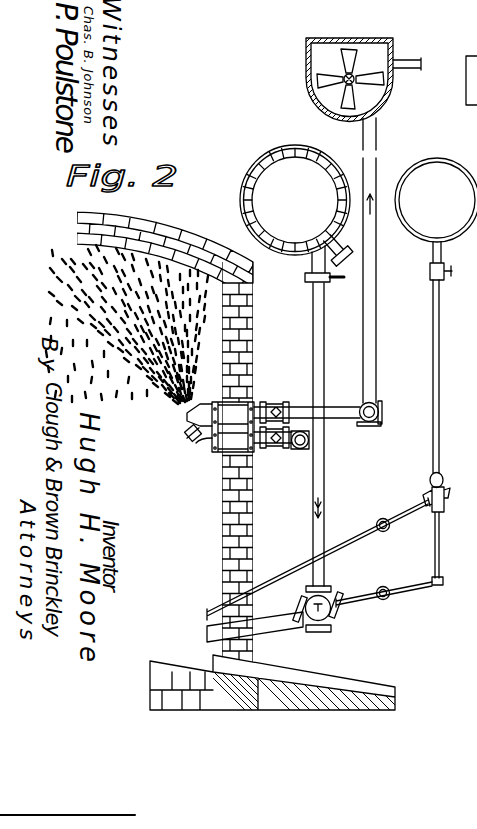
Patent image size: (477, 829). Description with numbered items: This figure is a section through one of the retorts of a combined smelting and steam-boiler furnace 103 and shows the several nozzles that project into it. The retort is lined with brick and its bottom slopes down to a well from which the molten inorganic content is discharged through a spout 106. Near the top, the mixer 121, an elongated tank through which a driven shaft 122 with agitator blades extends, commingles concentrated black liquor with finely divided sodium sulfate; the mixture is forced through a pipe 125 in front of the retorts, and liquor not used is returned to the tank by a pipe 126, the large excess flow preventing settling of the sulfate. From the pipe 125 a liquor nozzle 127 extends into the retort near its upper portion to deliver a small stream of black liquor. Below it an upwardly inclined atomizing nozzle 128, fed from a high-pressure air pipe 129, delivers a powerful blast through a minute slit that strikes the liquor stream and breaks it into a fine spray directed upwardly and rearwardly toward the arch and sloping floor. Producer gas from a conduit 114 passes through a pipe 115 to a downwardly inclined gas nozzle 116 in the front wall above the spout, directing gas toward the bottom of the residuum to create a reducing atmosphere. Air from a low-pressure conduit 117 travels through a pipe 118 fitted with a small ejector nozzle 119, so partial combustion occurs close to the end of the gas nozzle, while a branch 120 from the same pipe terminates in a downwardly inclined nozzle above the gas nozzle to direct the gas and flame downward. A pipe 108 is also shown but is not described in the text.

The combined smelting and steam-boiler furnace 103 is at (476, 588).
The spout 106 is at (398, 698).
The discharge pipe 108 is at (410, 58).
The producer gas conduit 114 is at (296, 213).
The gas pipe 115 is at (313, 311).
The gas nozzle 116 is at (276, 619).
The air conduit 117 is at (436, 219).
The air pipe 118 is at (433, 457).
The ejector nozzle 119 is at (327, 617).
The branch air nozzle 120 is at (286, 573).
The mixer 121 is at (306, 80).
The driven shaft 122 is at (330, 70).
The liquor supply pipe 125 is at (372, 404).
The return pipe 126 is at (377, 133).
The liquor nozzle 127 is at (233, 412).
The atomizing air nozzle 128 is at (194, 446).
The high-pressure air pipe 129 is at (297, 450).